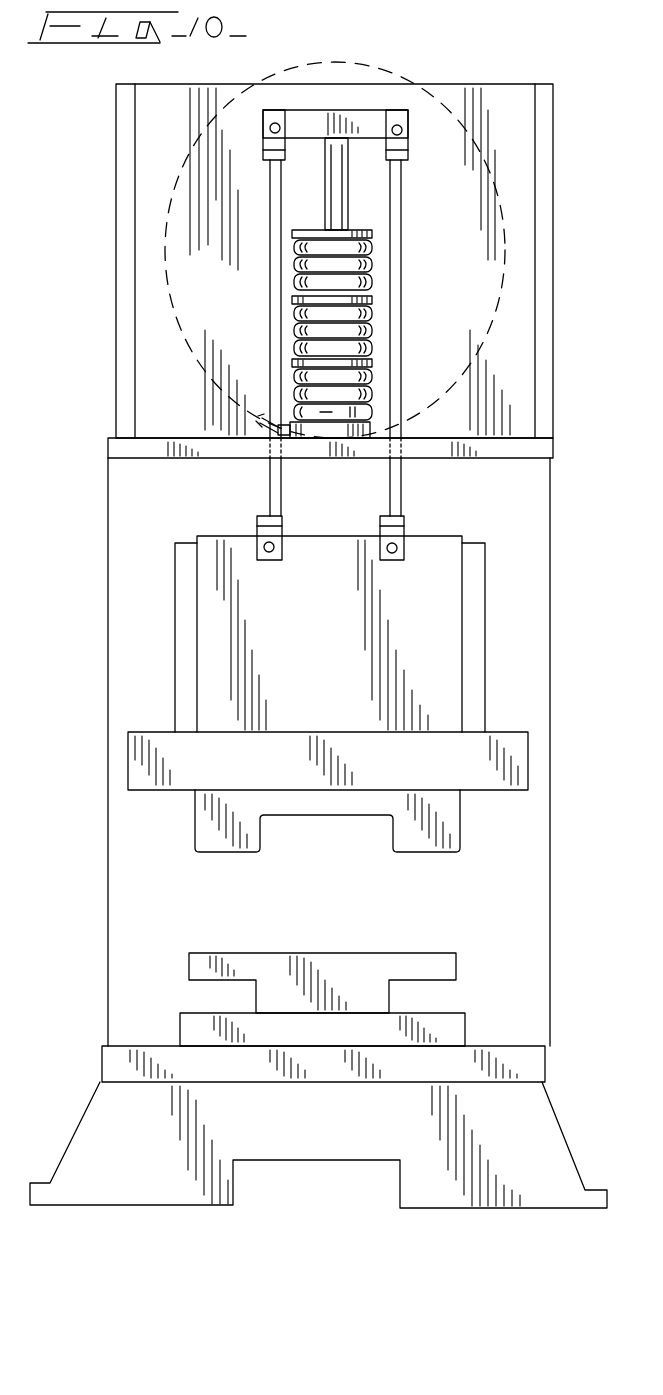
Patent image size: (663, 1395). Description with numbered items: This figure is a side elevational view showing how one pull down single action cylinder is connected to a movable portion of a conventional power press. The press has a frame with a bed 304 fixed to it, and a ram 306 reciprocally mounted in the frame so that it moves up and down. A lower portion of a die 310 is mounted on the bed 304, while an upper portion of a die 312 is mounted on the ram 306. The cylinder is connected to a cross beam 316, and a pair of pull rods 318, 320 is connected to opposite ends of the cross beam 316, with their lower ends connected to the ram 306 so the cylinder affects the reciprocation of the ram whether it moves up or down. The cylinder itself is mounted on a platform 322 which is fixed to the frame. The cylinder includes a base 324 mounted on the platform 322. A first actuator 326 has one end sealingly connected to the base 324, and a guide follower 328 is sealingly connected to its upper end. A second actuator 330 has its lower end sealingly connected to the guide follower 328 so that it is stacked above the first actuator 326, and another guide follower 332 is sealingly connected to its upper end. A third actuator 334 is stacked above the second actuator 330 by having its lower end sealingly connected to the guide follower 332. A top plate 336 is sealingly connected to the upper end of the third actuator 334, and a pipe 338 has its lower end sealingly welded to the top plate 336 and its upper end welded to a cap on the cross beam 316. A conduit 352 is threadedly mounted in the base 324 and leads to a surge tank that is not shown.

The bed 304 is at (447, 1026).
The ram 306 is at (432, 548).
The lower portion of a die 310 is at (424, 962).
The upper portion of a die 312 is at (414, 850).
The cross beam 316 is at (374, 120).
The pull rod 318 is at (272, 218).
The pull rod 320 is at (398, 185).
The platform 322 is at (438, 461).
The base 324 is at (378, 428).
The first actuator 326 is at (378, 397).
The guide follower 328 is at (378, 364).
The second actuator 330 is at (378, 333).
The guide follower 332 is at (378, 301).
The third actuator 334 is at (378, 268).
The top plate 336 is at (378, 234).
The pipe 338 is at (332, 172).
The conduit 352 is at (264, 440).